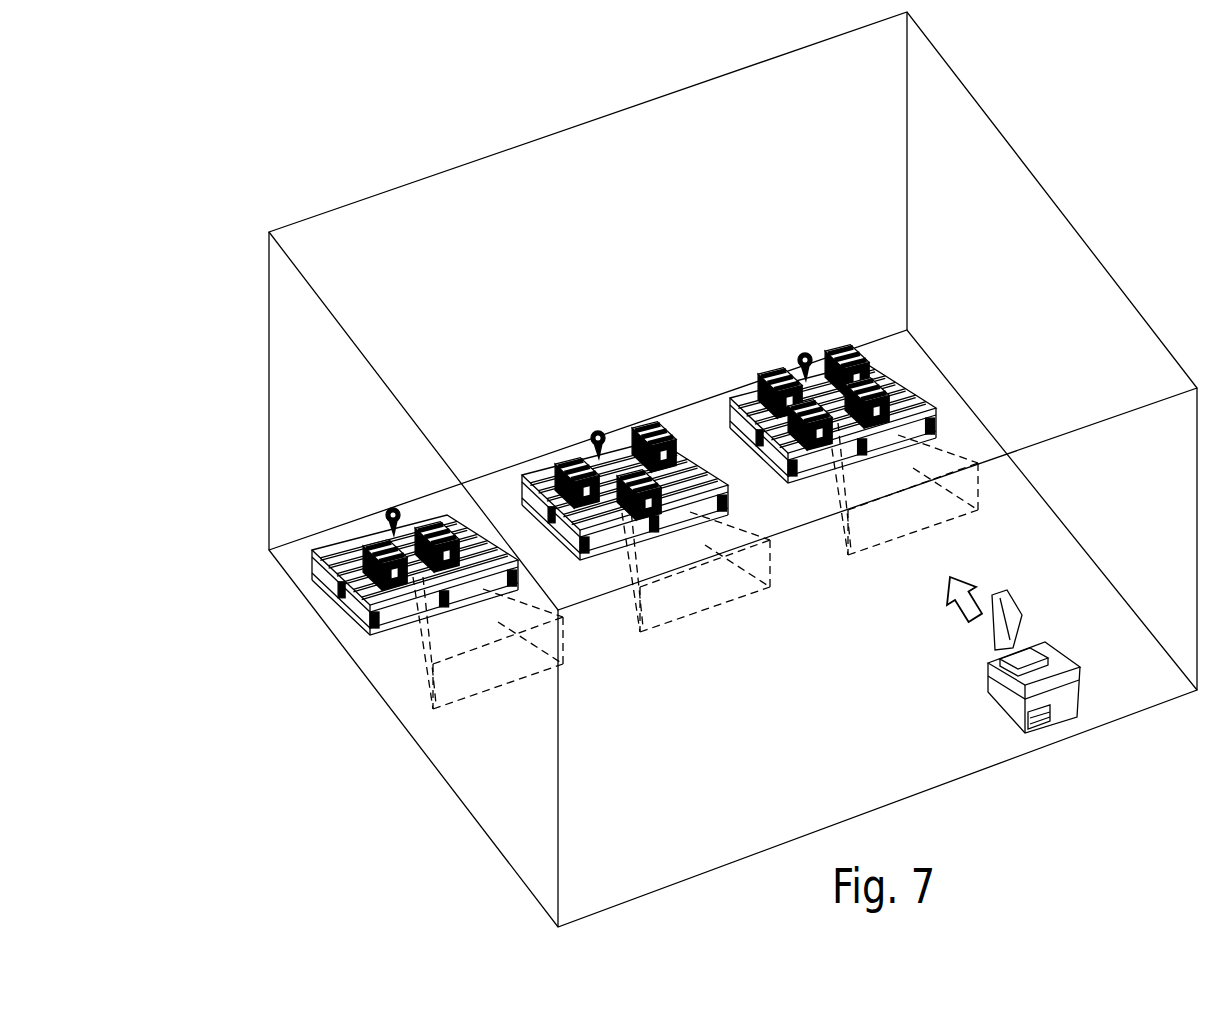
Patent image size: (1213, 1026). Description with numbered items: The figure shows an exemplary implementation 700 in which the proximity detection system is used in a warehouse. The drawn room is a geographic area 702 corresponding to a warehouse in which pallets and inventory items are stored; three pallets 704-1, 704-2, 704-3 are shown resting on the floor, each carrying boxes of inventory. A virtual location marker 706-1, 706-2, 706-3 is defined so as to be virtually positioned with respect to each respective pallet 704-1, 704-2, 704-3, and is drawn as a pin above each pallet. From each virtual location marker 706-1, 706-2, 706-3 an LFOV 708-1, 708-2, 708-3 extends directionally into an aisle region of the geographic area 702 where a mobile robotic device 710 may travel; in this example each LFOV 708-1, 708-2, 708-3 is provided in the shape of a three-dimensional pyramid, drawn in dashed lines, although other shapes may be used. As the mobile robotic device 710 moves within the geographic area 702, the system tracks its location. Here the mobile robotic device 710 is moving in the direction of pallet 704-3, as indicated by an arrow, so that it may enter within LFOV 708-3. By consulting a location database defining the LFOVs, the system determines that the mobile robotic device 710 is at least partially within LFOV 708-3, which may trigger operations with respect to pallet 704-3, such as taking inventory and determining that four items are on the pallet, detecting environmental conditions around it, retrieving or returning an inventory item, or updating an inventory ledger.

The exemplary implementation 700 is at (186, 101).
The geographic area 702 is at (269, 392).
The pallet 704-1 is at (312, 579).
The pallet 704-2 is at (540, 463).
The pallet 704-3 is at (730, 397).
The virtual location marker 706-1 is at (393, 507).
The virtual location marker 706-2 is at (598, 430).
The virtual location marker 706-3 is at (805, 352).
The LFOV 708-1 is at (488, 695).
The LFOV 708-2 is at (705, 614).
The LFOV 708-3 is at (913, 534).
The mobile robotic device 710 is at (1062, 720).